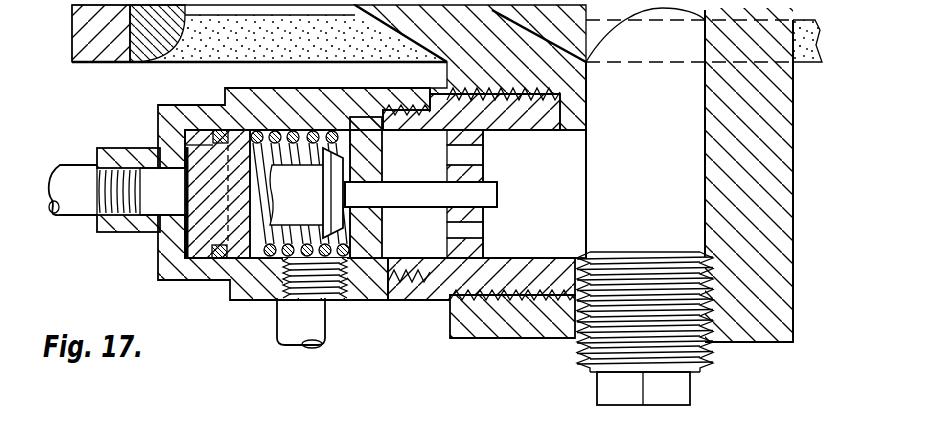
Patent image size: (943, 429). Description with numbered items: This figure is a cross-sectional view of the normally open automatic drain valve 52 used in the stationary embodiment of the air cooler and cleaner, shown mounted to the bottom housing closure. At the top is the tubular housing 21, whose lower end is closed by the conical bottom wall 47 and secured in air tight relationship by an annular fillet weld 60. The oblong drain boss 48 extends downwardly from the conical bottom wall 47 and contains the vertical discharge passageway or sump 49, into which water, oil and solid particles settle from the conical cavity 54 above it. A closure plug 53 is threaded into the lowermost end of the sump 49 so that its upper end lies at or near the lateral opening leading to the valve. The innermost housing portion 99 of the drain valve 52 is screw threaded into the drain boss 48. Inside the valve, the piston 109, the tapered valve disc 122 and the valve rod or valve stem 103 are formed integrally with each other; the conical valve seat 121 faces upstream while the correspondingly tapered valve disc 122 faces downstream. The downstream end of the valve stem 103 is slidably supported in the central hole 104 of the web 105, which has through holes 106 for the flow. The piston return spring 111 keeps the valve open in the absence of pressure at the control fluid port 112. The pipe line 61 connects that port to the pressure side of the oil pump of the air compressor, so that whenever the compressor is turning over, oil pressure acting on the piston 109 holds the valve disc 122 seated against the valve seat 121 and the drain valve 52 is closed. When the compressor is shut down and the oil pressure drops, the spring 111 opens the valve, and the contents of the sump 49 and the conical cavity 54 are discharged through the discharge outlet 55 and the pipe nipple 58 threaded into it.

The tubular housing 21 is at (72, 36).
The conical bottom wall 47 is at (452, 40).
The conical cavity 54 is at (553, 42).
The automatic drain valve 52 is at (156, 252).
The piston return spring 111 is at (278, 128).
The control fluid port 112 is at (152, 182).
The pipe line 61 is at (64, 166).
The piston 109 is at (230, 258).
The valve disc 122 is at (333, 188).
The conical valve seat 121 is at (382, 243).
The innermost housing portion 99 is at (437, 298).
The web 105 is at (476, 174).
The central hole 104 is at (477, 205).
The through holes 106 is at (470, 157).
The valve stem 103 is at (421, 194).
The discharge outlet 55 is at (275, 283).
The pipe nipple 58 is at (318, 334).
The sump 49 is at (689, 133).
The drain boss 48 is at (747, 337).
The annular fillet weld 60 is at (812, 63).
The closure plug 53 is at (692, 395).